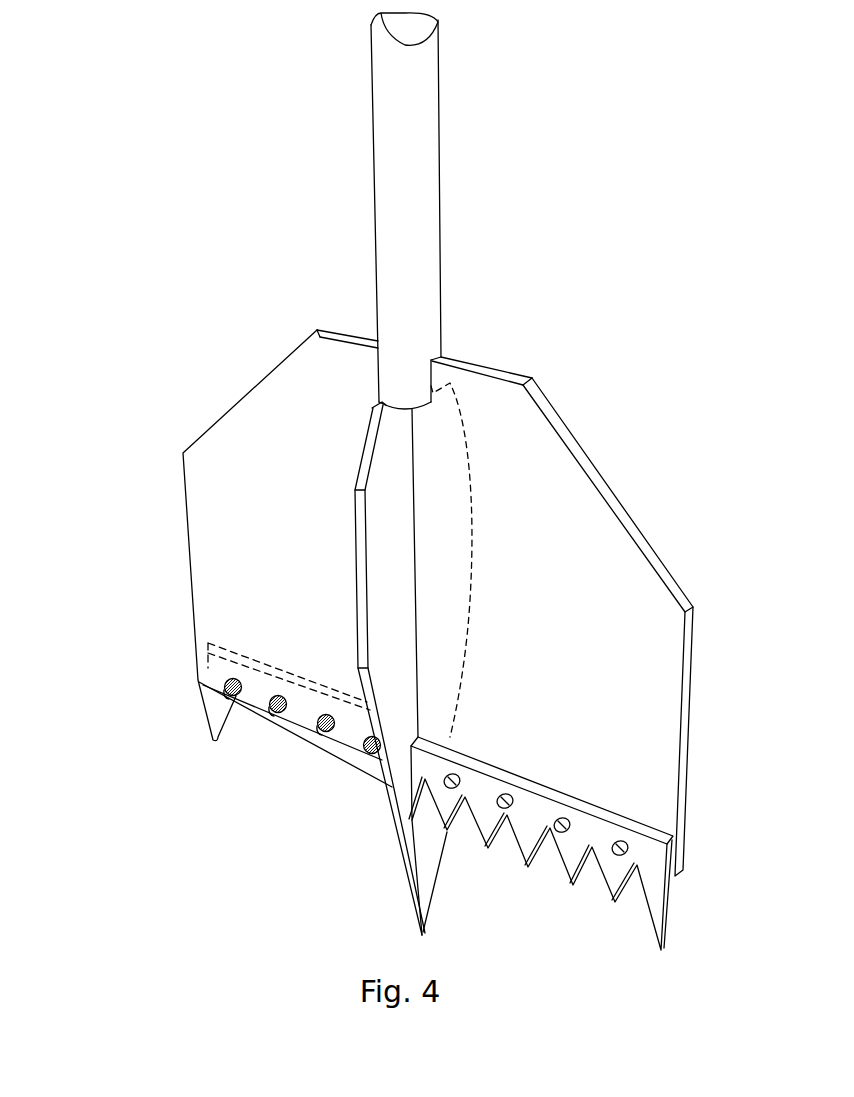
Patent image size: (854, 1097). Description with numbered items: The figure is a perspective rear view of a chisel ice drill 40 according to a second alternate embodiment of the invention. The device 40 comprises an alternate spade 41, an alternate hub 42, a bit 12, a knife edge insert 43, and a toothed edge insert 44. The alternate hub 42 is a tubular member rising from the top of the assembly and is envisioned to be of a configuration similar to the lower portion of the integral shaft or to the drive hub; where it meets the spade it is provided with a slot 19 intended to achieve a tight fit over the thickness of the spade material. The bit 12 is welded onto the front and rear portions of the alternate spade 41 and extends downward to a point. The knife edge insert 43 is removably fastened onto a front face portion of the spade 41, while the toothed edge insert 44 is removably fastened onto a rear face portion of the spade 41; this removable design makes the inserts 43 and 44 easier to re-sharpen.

The chisel ice drill 40 is at (124, 163).
The alternate hub 42 is at (427, 165).
The slot 19 is at (378, 373).
The bit 12 is at (398, 845).
The alternate spade 41 is at (565, 428).
The knife edge insert 43 is at (263, 722).
The toothed edge insert 44 is at (615, 812).